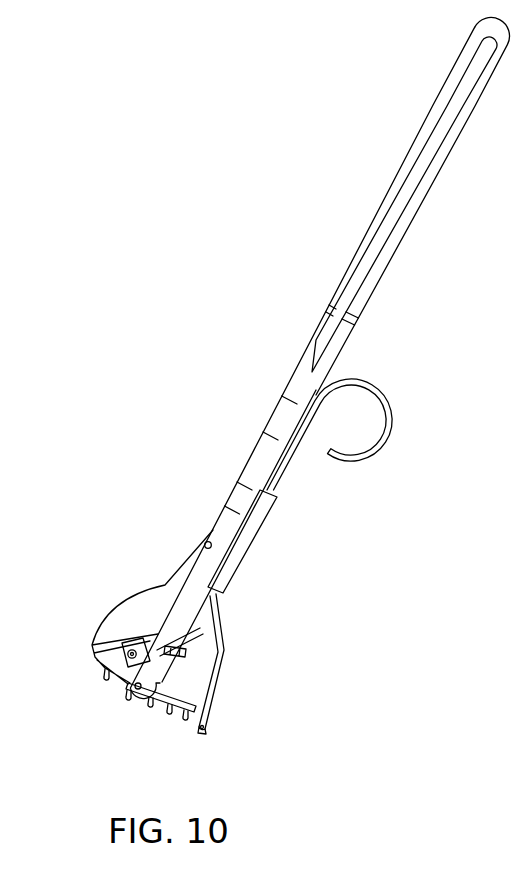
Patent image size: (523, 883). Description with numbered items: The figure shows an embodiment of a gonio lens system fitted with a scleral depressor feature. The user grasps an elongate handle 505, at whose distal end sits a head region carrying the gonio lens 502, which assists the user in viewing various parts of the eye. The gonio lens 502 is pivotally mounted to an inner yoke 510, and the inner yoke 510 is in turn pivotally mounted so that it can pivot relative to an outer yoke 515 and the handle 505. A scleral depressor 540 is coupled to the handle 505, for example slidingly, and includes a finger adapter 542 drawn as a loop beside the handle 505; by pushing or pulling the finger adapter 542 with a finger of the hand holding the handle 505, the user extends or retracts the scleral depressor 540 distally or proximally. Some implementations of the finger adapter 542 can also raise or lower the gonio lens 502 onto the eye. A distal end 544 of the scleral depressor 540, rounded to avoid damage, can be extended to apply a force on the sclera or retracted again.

The handle 505 is at (398, 212).
The finger adapter 542 is at (392, 412).
The gonio lens 502 is at (122, 610).
The inner yoke 510 is at (127, 655).
The outer yoke 515 is at (190, 632).
The scleral depressor 540 is at (245, 687).
The distal end 544 is at (202, 735).